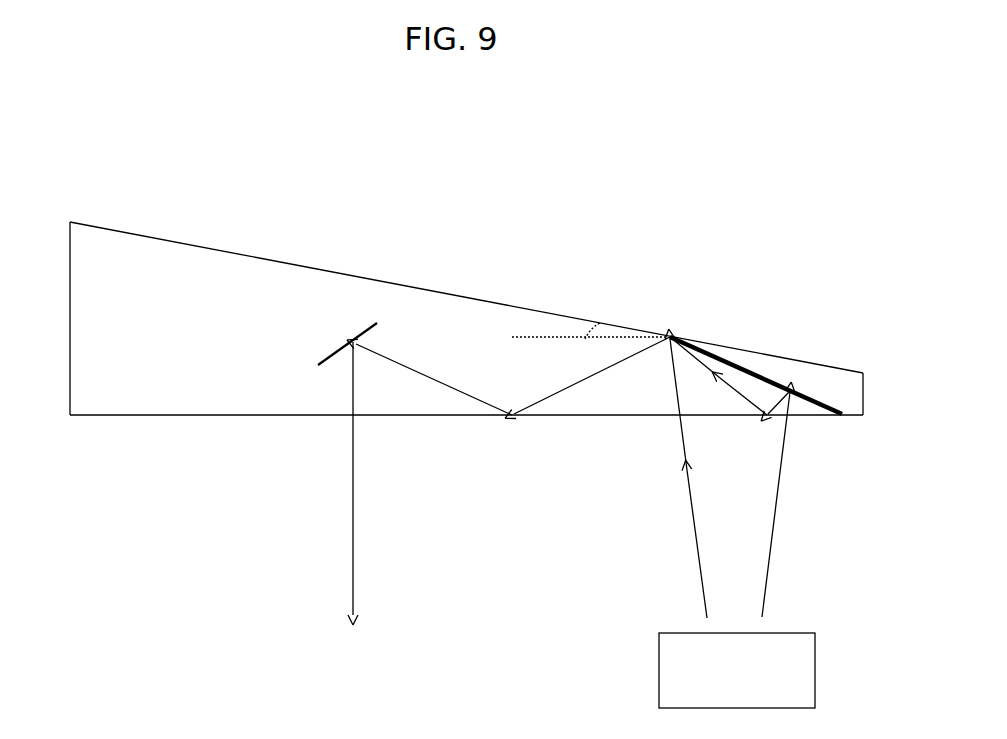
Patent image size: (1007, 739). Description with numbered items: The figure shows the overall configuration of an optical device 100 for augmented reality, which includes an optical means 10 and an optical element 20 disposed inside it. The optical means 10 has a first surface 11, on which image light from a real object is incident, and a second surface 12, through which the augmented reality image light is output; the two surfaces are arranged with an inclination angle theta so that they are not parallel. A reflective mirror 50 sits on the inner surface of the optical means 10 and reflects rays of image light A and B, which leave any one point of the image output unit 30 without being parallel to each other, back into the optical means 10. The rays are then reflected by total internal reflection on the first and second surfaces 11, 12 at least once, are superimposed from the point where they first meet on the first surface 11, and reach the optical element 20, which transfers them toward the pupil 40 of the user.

The optical device for augmented reality 100 is at (576, 178).
The optical means 10 is at (115, 320).
The first surface 11 is at (173, 240).
The second surface 12 is at (165, 417).
The optical element 20 is at (318, 356).
The image output unit 30 is at (817, 670).
The pupil 40 is at (358, 501).
The reflective mirror 50 is at (757, 373).